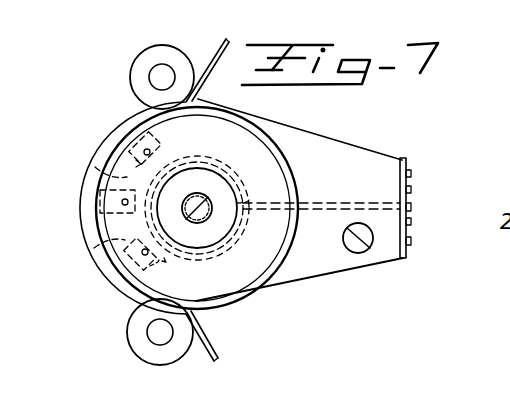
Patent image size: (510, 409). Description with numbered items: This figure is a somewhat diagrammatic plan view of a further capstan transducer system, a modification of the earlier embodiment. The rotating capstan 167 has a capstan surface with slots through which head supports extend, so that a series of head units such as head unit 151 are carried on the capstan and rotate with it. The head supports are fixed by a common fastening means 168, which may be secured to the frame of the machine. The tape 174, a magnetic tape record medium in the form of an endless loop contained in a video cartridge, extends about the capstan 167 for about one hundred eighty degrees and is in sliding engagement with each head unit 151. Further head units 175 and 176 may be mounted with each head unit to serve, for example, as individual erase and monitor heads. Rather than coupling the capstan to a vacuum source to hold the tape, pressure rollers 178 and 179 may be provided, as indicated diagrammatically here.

The head unit 151 is at (97, 225).
The capstan 167 is at (258, 261).
The common fastening means 168 is at (350, 252).
The tape 174 is at (213, 343).
The head unit 175 is at (127, 165).
The head unit 176 is at (133, 281).
The pressure roller 178 is at (147, 348).
The pressure roller 179 is at (151, 52).